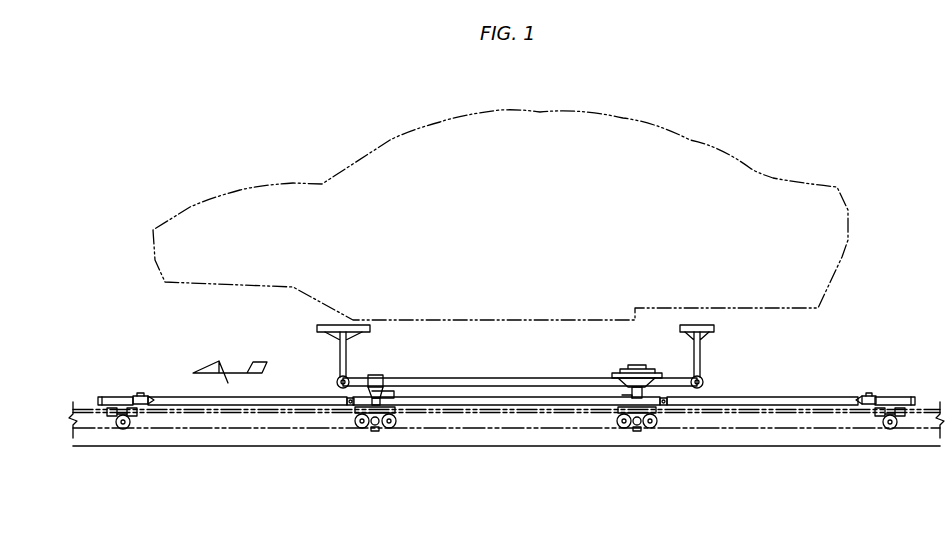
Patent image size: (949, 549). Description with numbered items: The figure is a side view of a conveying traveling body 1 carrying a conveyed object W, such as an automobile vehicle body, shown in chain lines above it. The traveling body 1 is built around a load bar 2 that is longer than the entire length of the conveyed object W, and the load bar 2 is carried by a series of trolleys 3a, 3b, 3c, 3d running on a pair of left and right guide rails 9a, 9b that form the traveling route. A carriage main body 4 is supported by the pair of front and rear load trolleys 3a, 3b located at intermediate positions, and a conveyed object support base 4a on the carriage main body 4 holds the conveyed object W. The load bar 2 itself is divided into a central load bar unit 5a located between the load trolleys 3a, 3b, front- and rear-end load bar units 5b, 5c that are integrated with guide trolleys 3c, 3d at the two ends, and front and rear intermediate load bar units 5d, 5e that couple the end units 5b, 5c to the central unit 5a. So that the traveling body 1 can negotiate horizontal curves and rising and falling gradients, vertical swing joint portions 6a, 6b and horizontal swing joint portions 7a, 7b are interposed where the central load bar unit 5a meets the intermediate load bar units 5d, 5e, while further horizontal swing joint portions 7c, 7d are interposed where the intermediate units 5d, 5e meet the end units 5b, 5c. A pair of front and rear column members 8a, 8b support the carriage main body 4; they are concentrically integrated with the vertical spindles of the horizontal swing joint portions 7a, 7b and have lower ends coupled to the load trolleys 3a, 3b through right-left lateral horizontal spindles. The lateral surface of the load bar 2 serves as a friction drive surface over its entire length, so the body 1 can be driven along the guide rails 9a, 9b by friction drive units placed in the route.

The conveyed object W is at (388, 156).
The conveying traveling body 1 is at (509, 360).
The load bar 2 is at (534, 388).
The load trolley 3a is at (398, 426).
The load trolley 3b is at (615, 424).
The guide trolley 3c is at (117, 426).
The guide trolley 3d is at (882, 426).
The carriage main body 4 is at (452, 378).
The conveyed object support base 4a is at (343, 325).
The central load bar unit 5a is at (488, 406).
The front-end load bar unit 5b is at (124, 401).
The rear-end load bar unit 5c is at (893, 397).
The front intermediate load bar unit 5d is at (237, 406).
The rear intermediate load bar unit 5e is at (778, 397).
The vertical swing joint portion 6a is at (350, 407).
The vertical swing joint portion 6b is at (665, 407).
The horizontal swing joint portion 7a is at (371, 376).
The horizontal swing joint portion 7b is at (654, 374).
The horizontal swing joint portion 7c is at (147, 396).
The horizontal swing joint portion 7d is at (860, 398).
The column member 8a is at (384, 392).
The column member 8b is at (622, 395).
The guide rail 9a is at (543, 422).
The guide rail 9b is at (543, 422).